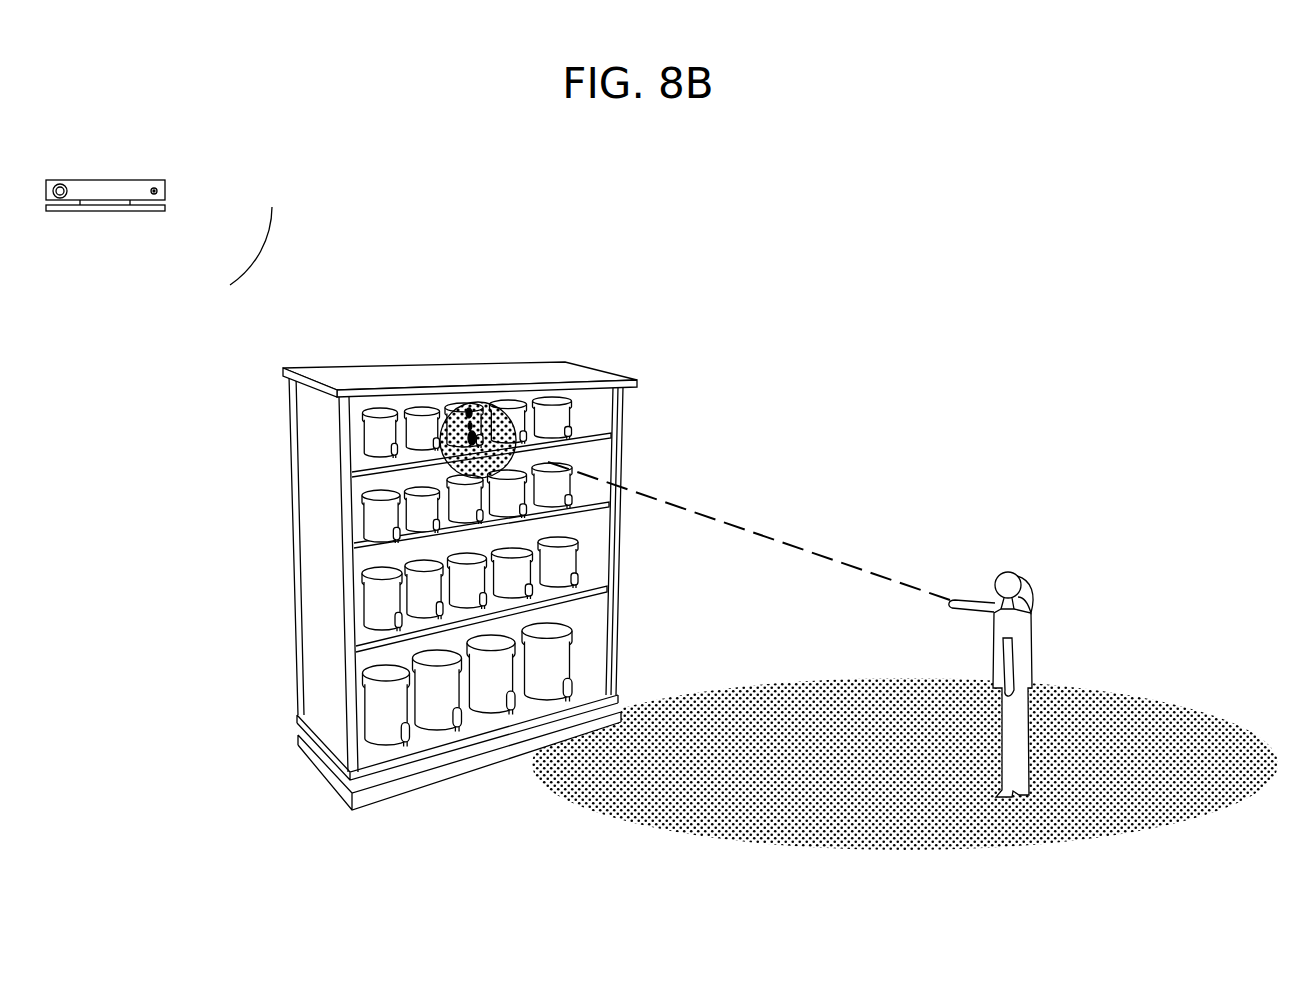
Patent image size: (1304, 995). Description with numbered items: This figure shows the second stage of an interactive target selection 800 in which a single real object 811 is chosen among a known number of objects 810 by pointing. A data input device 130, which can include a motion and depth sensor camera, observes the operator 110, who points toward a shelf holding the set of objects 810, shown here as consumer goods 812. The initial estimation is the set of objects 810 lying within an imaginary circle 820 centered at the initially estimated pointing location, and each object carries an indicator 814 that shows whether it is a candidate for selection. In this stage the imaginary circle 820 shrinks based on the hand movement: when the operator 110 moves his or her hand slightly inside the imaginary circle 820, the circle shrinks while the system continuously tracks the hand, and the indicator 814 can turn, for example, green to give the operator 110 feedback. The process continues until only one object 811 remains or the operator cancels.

The data input device 130 is at (125, 165).
The interactive target selection 800 is at (933, 365).
The objects 810 is at (422, 544).
The single real object 811 is at (445, 415).
The consumer goods 812 is at (517, 377).
The indicator 814 is at (470, 408).
The imaginary circle 820 is at (307, 482).
The operator 110 is at (1087, 648).